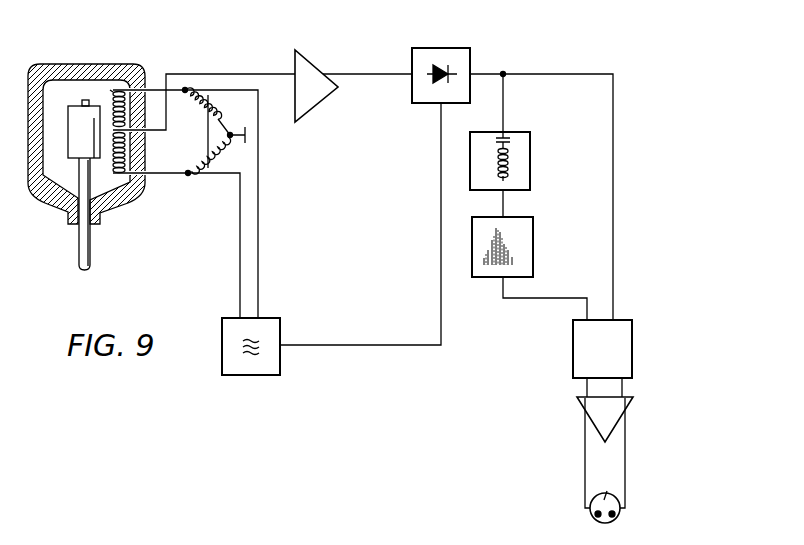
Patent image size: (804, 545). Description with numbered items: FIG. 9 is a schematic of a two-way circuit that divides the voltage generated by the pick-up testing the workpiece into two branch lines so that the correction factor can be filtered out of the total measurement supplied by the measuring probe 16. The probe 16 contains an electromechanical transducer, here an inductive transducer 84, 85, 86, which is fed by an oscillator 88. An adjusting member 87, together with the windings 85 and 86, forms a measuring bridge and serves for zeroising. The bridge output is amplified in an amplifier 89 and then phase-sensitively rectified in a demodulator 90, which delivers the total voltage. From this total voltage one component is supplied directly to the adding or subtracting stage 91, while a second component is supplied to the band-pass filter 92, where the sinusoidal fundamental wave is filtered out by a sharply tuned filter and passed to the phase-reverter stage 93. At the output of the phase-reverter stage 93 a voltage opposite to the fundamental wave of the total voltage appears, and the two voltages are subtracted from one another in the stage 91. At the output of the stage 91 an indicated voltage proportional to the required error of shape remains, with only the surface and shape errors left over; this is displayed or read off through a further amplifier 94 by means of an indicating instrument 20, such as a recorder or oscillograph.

The measuring probe 16 is at (54, 190).
The inductive transducer 84 is at (76, 106).
The winding 85 is at (120, 175).
The winding 86 is at (104, 107).
The adjusting member 87 is at (215, 112).
The oscillator 88 is at (232, 325).
The amplifier 89 is at (313, 72).
The demodulator 90 is at (442, 48).
The adding or subtracting stage 91 is at (578, 350).
The band-pass filter 92 is at (526, 157).
The phase-reverter stage 93 is at (526, 230).
The output amplifier 94 is at (589, 415).
The gauge 20 is at (586, 508).